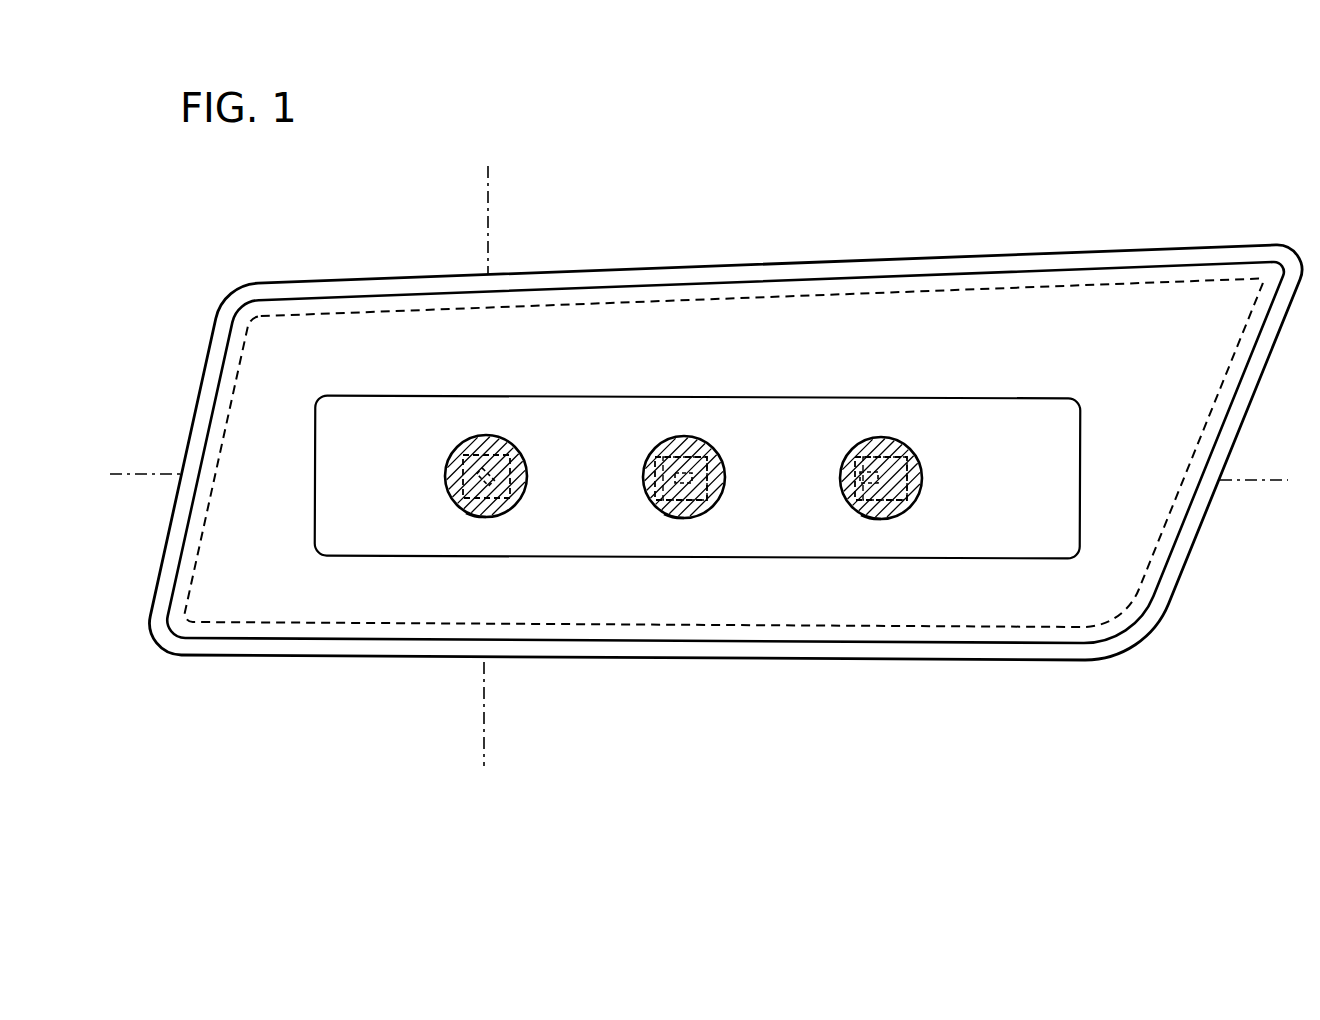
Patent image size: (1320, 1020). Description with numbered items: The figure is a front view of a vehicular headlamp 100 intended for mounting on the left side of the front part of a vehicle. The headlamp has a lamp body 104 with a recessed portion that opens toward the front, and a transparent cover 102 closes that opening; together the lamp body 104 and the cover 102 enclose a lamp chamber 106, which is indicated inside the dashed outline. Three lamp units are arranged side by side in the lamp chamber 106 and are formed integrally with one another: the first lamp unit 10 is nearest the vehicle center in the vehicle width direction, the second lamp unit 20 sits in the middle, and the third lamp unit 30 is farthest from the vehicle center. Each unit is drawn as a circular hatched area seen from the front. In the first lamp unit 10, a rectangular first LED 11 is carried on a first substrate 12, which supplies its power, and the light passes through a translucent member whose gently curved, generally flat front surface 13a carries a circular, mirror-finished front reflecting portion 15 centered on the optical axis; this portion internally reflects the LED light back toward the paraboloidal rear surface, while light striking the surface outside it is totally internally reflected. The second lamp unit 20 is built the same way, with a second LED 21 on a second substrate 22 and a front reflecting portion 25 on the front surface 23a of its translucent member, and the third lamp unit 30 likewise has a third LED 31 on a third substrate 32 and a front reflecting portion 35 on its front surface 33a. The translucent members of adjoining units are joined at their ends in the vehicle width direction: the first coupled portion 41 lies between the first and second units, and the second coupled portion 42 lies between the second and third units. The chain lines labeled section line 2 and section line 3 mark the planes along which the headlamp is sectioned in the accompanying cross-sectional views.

The vehicular headlamp 100 is at (700, 236).
The transparent cover 102 is at (921, 312).
The lamp body 104 is at (1090, 252).
The lamp chamber 106 is at (1175, 349).
The section line 2 is at (697, 477).
The section line 3 is at (485, 467).
The first lamp unit 10 is at (443, 513).
The first LED 11 is at (483, 470).
The first substrate 12 is at (520, 460).
The front surface of first translucent member 13a is at (467, 530).
The front reflecting portion 15 is at (478, 442).
The second lamp unit 20 is at (655, 516).
The second LED 21 is at (681, 470).
The second substrate 22 is at (722, 460).
The front surface of second translucent member 23a is at (681, 530).
The front reflecting portion 25 is at (680, 442).
The third lamp unit 30 is at (851, 517).
The third LED 31 is at (877, 470).
The third substrate 32 is at (918, 461).
The front surface of third translucent member 33a is at (898, 530).
The front reflecting portion 35 is at (877, 442).
The first coupled portion 41 is at (590, 492).
The second coupled portion 42 is at (784, 492).